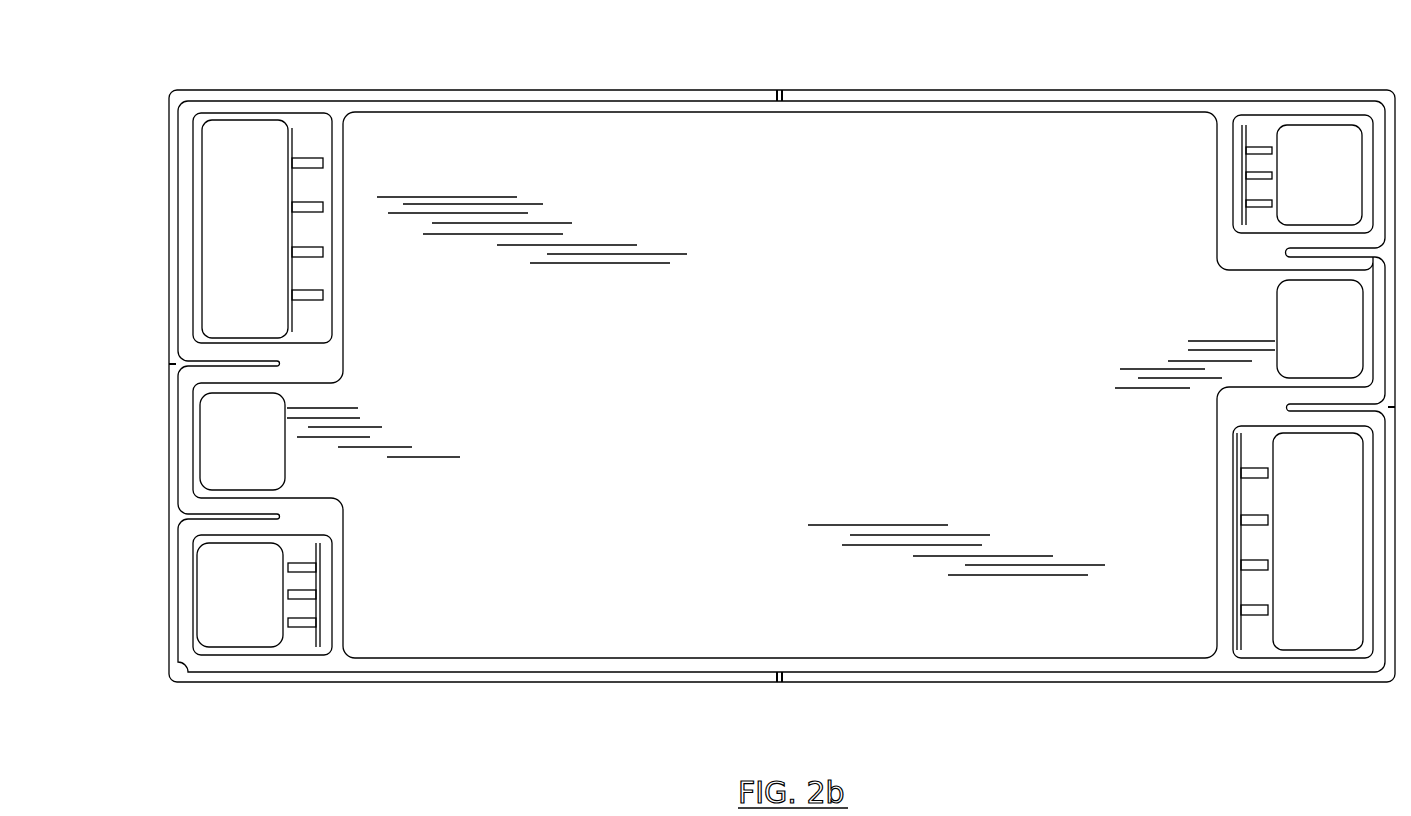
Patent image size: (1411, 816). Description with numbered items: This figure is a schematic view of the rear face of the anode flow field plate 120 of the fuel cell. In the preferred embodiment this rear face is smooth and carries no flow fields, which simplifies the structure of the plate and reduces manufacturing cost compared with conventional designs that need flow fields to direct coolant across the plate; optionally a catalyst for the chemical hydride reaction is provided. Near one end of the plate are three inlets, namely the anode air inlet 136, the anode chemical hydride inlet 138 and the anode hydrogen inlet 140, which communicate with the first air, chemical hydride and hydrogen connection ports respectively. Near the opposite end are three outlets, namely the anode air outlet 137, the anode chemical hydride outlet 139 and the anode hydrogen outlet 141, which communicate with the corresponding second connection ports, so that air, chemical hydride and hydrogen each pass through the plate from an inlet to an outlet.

The anode flow field plate 120 is at (798, 701).
The anode air inlet 136 is at (1303, 625).
The anode air outlet 137 is at (233, 207).
The anode chemical hydride inlet 138 is at (1296, 341).
The anode chemical hydride outlet 139 is at (224, 447).
The anode hydrogen inlet 140 is at (1327, 145).
The anode hydrogen outlet 141 is at (217, 604).